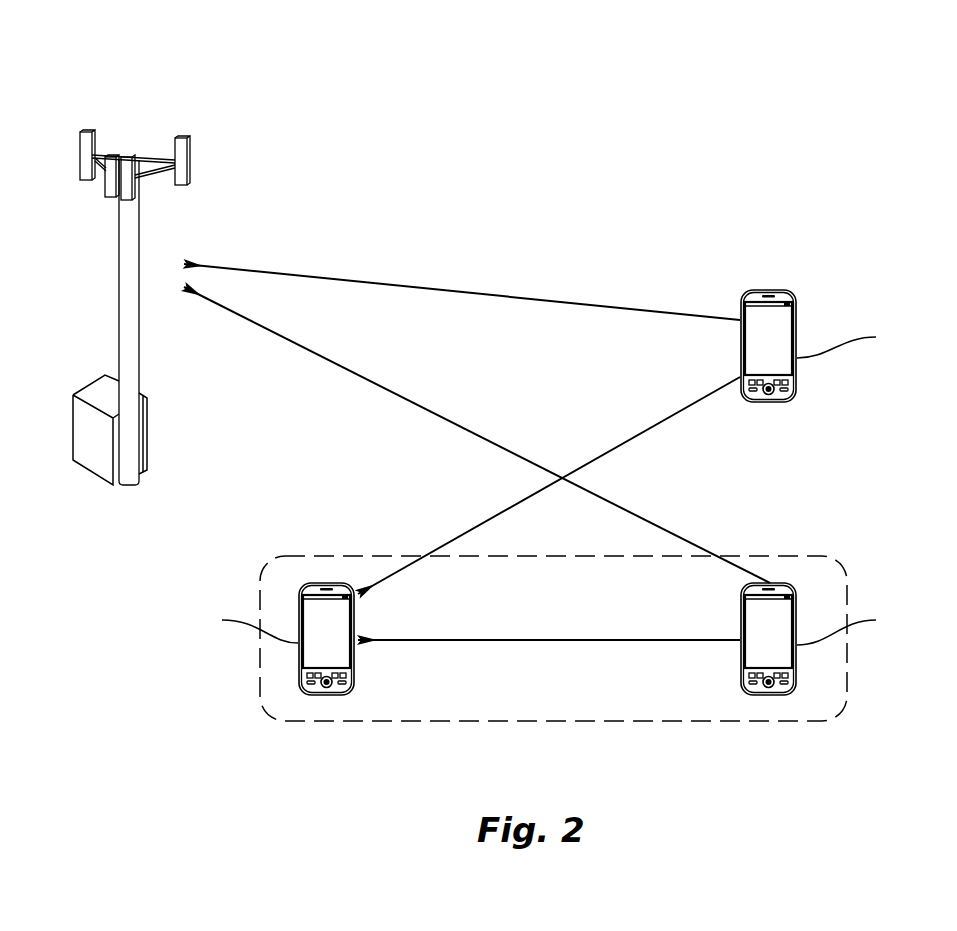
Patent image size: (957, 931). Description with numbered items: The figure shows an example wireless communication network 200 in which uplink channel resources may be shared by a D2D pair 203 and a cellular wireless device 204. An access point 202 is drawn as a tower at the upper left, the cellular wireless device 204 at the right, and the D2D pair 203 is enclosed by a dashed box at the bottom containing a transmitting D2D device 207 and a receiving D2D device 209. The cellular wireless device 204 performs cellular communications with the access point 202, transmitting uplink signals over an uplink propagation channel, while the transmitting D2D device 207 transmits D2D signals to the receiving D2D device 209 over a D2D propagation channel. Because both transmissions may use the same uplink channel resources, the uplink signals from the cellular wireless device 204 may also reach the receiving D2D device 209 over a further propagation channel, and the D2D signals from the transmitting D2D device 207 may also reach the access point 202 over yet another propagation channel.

The wireless communication network 200 is at (824, 120).
The access point 202 is at (112, 114).
The D2D pair 203 is at (572, 727).
The cellular wireless device (CUE) 204 is at (797, 323).
The transmitting D2D device (DUE_T) 207 is at (797, 610).
The receiving D2D device (DUE_R) 209 is at (298, 611).